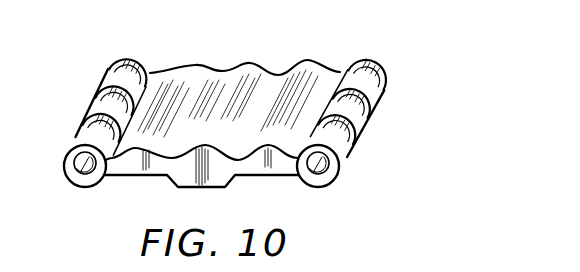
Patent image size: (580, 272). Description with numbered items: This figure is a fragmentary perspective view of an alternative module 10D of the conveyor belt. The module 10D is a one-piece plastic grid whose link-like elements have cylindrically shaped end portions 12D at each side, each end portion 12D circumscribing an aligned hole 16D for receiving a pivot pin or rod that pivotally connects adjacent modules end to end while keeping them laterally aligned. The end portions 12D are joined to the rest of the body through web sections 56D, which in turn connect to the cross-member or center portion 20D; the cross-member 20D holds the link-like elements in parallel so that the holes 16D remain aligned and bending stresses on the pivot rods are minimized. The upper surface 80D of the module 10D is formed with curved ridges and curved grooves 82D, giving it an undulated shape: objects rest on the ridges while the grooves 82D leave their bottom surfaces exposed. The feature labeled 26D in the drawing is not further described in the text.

The module 10D is at (323, 52).
The end portion 12D is at (66, 160).
The hole 16D is at (83, 172).
The cross-member 20D is at (195, 179).
The corrugated hinge leaf 26D is at (233, 80).
The web section 56D is at (268, 168).
The upper surface 80D is at (183, 80).
The groove 82D is at (159, 82).